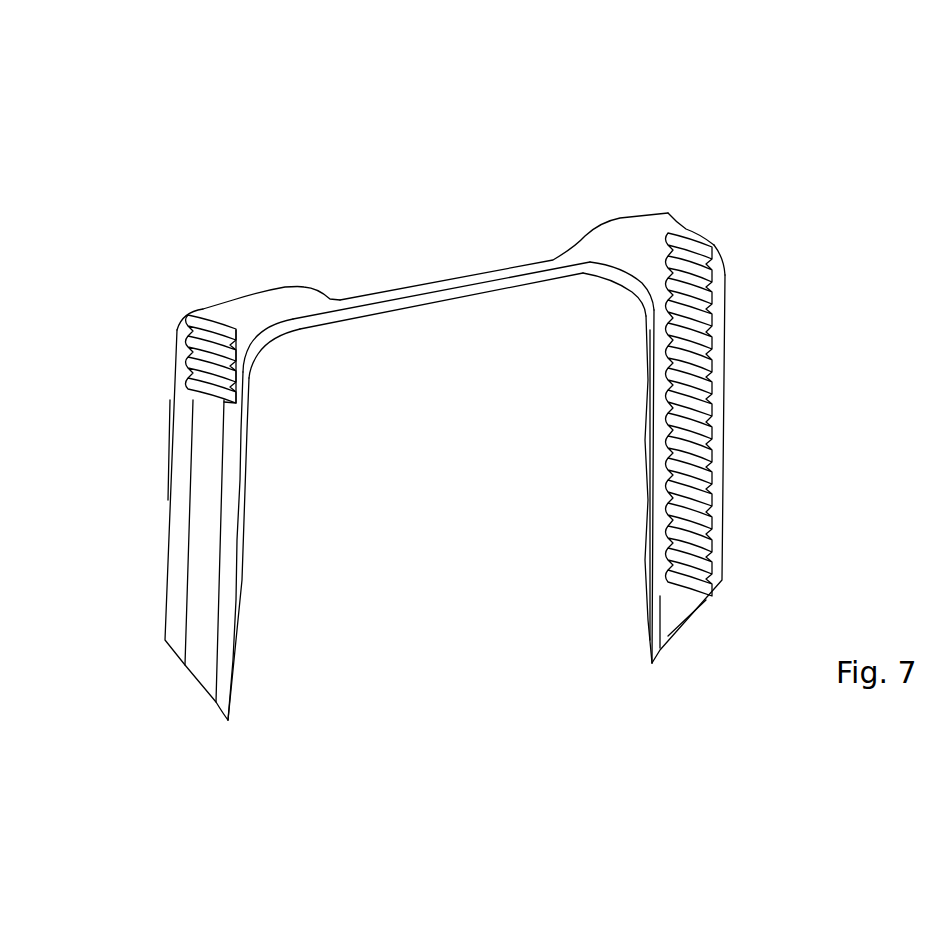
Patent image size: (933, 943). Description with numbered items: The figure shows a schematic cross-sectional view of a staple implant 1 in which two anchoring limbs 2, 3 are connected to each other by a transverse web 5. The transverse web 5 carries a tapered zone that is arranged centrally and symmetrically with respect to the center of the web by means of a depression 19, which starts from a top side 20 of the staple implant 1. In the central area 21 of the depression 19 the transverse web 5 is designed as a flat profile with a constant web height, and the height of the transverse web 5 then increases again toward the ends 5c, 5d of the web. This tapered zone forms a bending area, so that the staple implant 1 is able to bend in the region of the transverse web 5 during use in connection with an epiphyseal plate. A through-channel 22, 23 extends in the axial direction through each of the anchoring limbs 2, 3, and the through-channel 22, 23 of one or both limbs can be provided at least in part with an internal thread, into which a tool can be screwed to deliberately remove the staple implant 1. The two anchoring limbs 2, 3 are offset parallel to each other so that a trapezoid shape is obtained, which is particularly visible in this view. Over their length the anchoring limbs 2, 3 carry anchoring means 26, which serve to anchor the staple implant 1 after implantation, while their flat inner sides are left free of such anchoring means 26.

The staple implant 1 is at (803, 143).
The anchoring limb 2 is at (225, 525).
The anchoring limb 3 is at (713, 458).
The transverse web 5 is at (293, 302).
The end of the transverse web 5c is at (268, 300).
The end of the transverse web 5d is at (597, 247).
The depression 19 is at (455, 277).
The top side 20 is at (650, 208).
The central area 21 is at (437, 288).
The through-channel 22 is at (205, 486).
The through-channel 23 is at (715, 368).
The anchoring means 26 is at (247, 425).